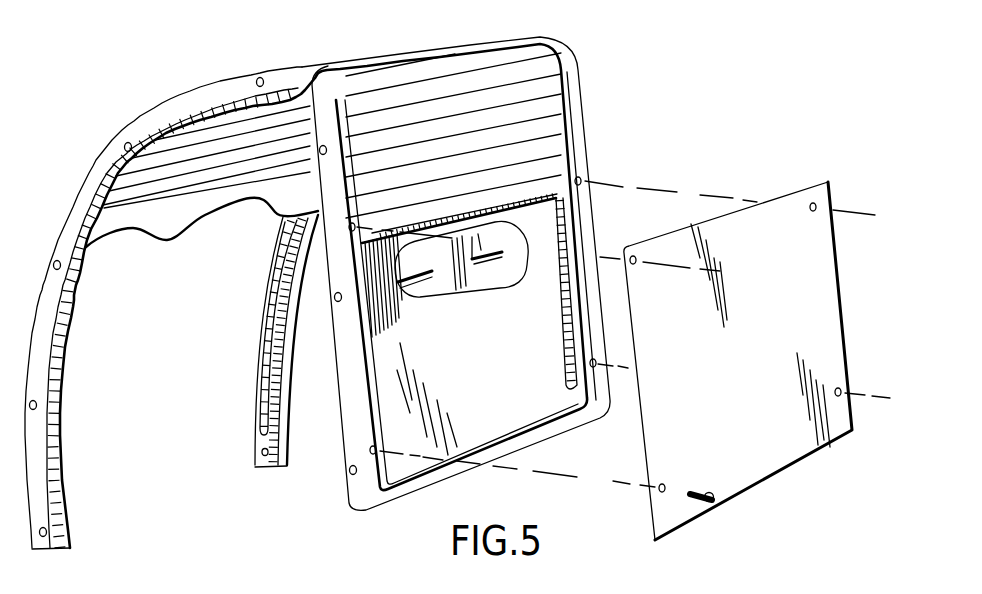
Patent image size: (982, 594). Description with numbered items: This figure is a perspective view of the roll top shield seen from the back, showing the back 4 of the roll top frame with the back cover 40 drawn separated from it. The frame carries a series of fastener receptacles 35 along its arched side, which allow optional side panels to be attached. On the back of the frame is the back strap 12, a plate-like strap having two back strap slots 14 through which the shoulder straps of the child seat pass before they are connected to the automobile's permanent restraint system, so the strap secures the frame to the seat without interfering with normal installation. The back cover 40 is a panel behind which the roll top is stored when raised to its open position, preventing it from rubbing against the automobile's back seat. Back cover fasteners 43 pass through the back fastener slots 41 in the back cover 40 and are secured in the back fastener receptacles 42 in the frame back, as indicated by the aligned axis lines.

The canopy frame 4 is at (466, 273).
The back strap 12 is at (417, 303).
The back strap slots 14 is at (429, 273).
The fastener receptacles 35 is at (55, 260).
The back cover 40 is at (793, 426).
The back fastener slots 41 is at (637, 256).
The frame mounting holes 42 is at (352, 223).
The back cover fasteners 43 is at (693, 503).